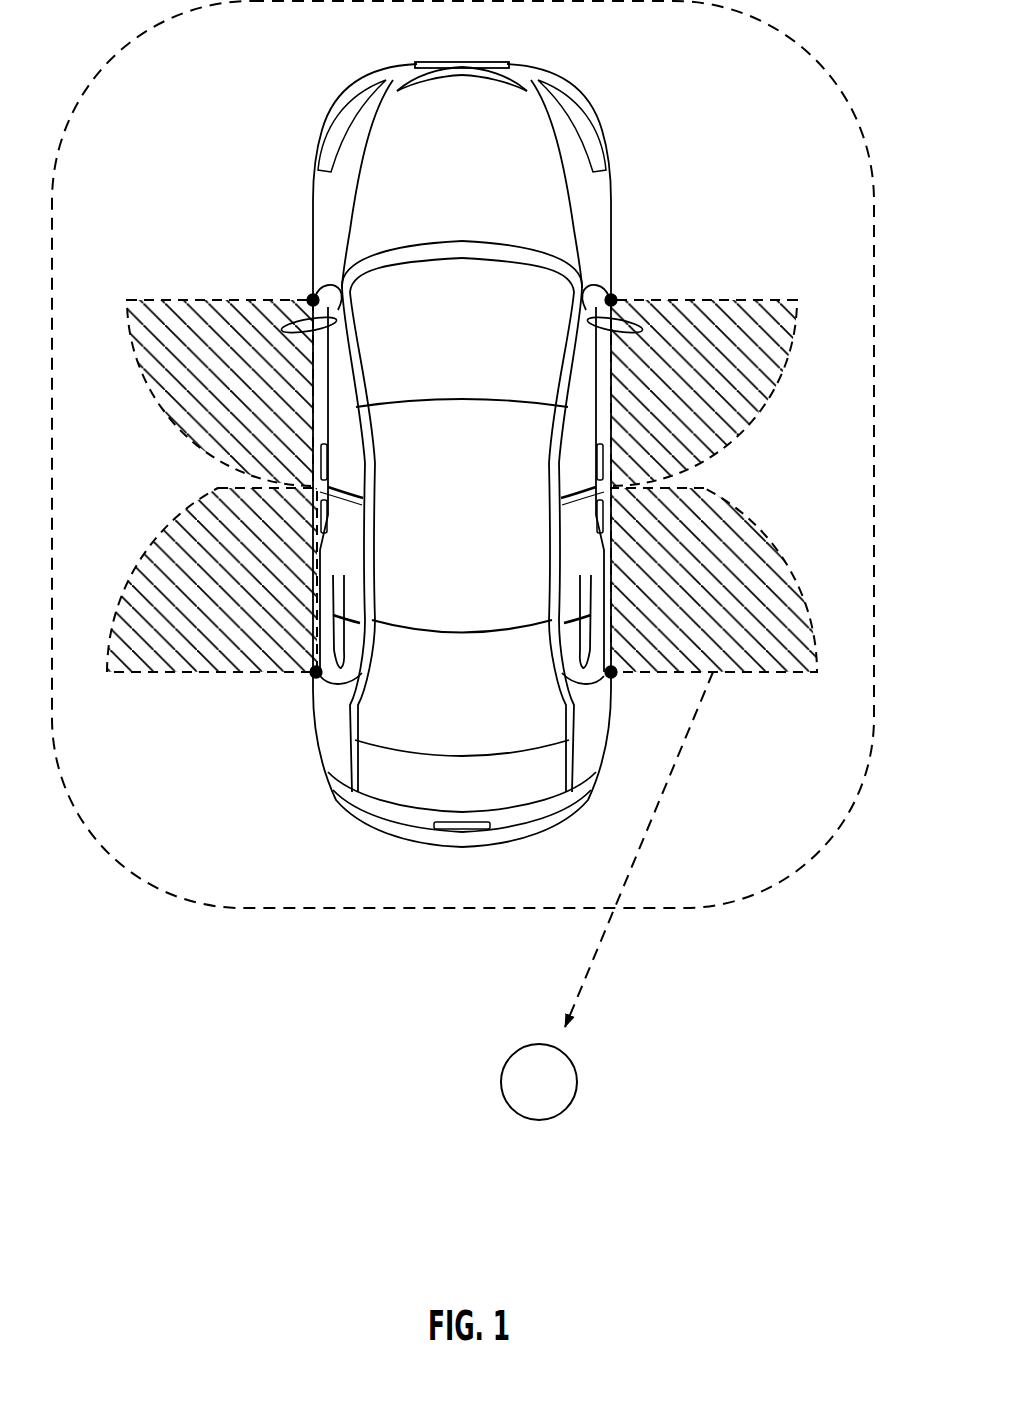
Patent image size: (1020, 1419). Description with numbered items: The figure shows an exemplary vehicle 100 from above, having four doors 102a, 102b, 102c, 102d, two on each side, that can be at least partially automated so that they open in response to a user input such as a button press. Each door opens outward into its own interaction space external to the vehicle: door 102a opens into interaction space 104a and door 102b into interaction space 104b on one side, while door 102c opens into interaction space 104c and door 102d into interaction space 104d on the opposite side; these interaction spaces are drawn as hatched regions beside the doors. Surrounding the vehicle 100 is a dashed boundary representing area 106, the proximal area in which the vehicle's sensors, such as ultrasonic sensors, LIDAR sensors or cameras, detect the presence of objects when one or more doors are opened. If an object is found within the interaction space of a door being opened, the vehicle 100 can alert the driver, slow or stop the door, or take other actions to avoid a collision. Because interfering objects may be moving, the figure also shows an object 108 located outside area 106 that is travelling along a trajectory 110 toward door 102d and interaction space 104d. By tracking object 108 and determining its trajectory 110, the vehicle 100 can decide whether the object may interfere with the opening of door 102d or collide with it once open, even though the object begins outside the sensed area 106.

The vehicle 100 is at (457, 62).
The door 102a is at (316, 375).
The door 102b is at (314, 583).
The door 102c is at (608, 375).
The door 102d is at (610, 583).
The interaction space 104a is at (200, 325).
The interaction space 104b is at (185, 647).
The interaction space 104c is at (722, 325).
The interaction space 104d is at (723, 645).
The area 106 is at (817, 62).
The object 108 is at (578, 1082).
The trajectory 110 is at (655, 813).